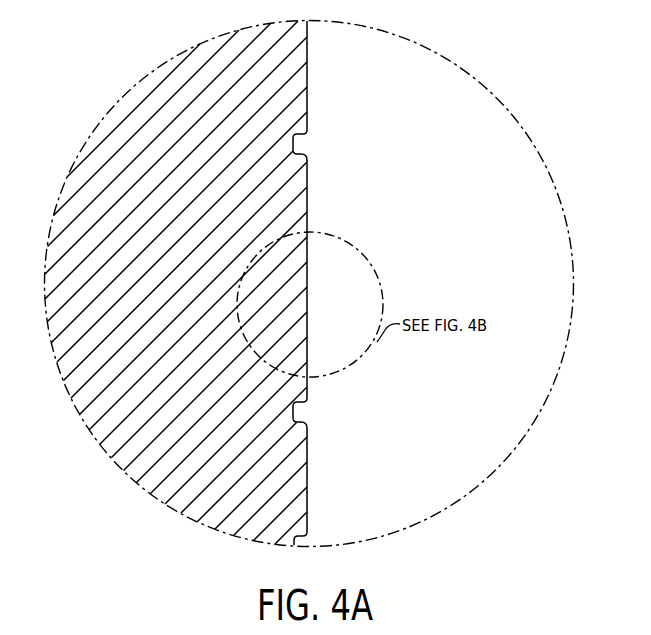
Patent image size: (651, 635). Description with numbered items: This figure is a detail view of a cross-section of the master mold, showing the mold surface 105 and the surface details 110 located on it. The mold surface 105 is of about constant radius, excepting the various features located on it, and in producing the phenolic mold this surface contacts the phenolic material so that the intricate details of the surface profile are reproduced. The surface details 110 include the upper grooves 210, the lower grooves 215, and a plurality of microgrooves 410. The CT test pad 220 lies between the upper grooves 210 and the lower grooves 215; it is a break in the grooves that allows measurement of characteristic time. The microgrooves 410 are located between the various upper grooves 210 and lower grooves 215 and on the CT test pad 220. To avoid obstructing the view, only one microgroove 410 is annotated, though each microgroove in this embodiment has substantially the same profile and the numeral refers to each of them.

The surface details 110 is at (338, 48).
The mold surface 105 is at (311, 92).
The upper grooves 210 is at (302, 145).
The microgroove 410 is at (307, 172).
The CT test pad 220 is at (312, 220).
The lower grooves 215 is at (302, 416).